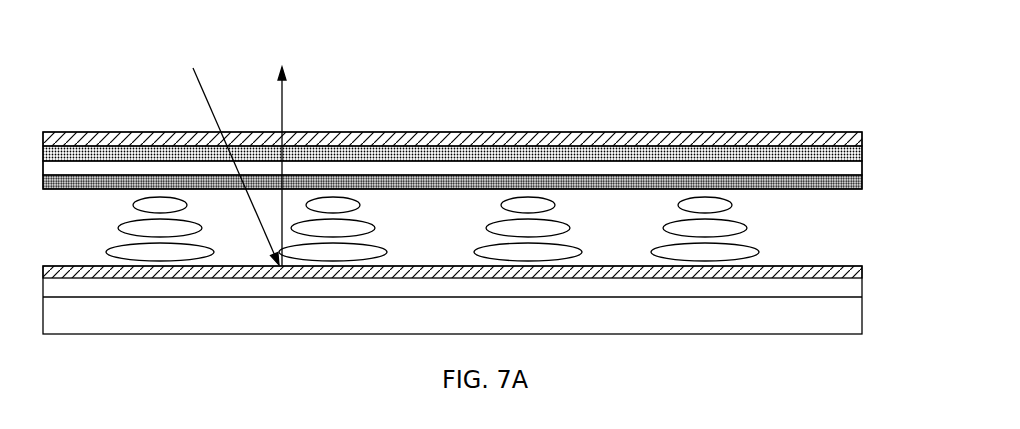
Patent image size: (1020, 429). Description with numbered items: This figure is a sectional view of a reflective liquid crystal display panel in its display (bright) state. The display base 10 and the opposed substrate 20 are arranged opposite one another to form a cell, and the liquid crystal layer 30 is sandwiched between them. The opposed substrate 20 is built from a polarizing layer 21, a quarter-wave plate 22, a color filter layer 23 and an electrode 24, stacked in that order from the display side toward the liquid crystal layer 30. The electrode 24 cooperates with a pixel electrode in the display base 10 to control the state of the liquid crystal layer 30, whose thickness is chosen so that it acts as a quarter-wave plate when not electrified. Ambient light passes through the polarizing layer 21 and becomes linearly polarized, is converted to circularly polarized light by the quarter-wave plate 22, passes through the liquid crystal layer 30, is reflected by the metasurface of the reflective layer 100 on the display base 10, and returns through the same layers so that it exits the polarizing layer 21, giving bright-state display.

The display base 10 is at (867, 266).
The reflective layer 100 is at (478, 257).
The opposed substrate 20 is at (867, 132).
The polarizing layer 21 is at (452, 112).
The quarter-wave plate 22 is at (452, 120).
The color filter layer 23 is at (452, 127).
The electrode 24 is at (452, 134).
The liquid crystal layer 30 is at (460, 229).